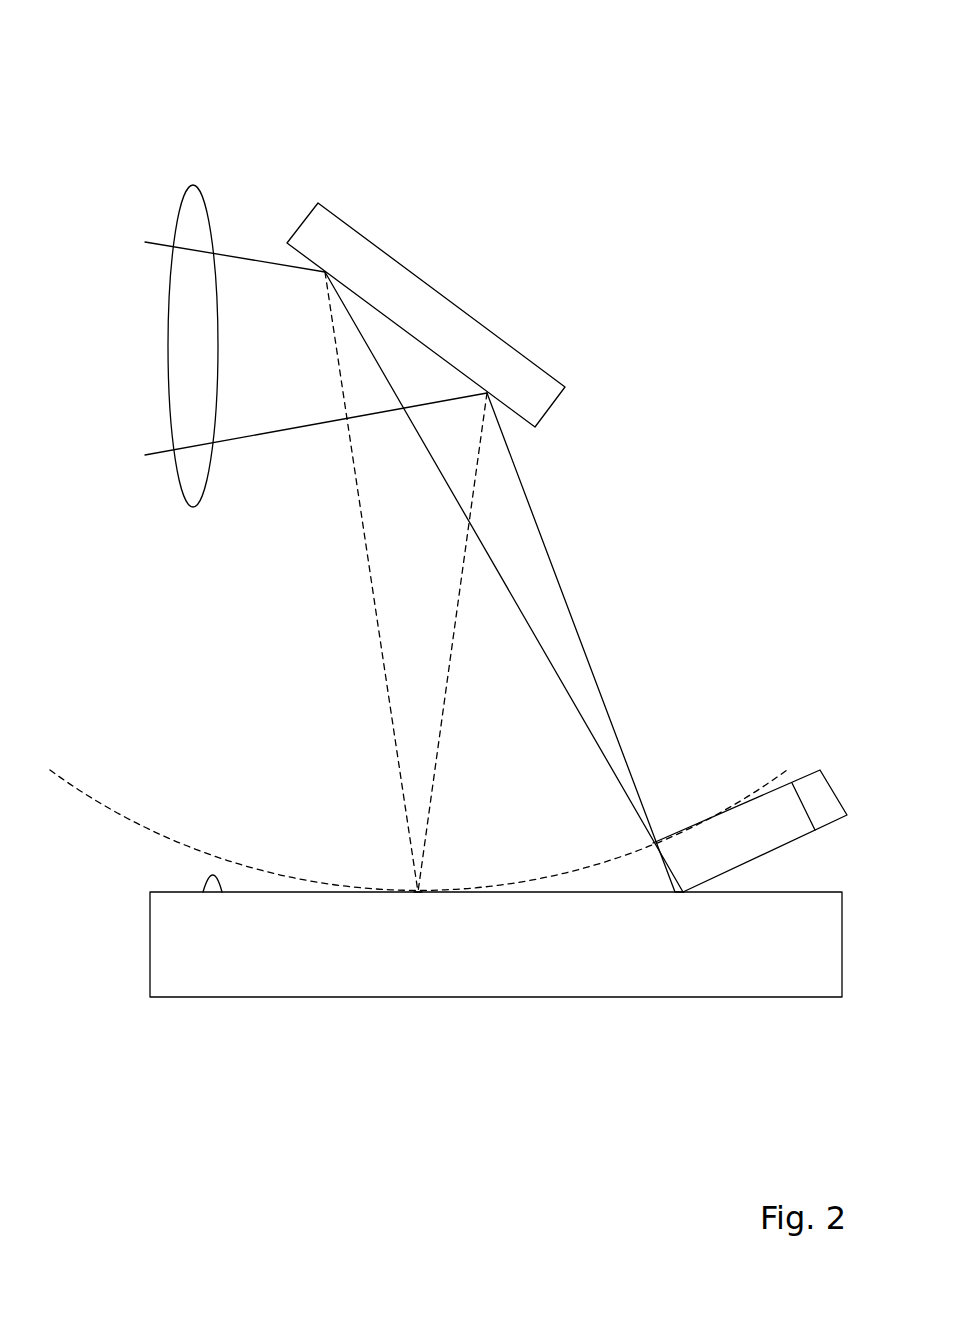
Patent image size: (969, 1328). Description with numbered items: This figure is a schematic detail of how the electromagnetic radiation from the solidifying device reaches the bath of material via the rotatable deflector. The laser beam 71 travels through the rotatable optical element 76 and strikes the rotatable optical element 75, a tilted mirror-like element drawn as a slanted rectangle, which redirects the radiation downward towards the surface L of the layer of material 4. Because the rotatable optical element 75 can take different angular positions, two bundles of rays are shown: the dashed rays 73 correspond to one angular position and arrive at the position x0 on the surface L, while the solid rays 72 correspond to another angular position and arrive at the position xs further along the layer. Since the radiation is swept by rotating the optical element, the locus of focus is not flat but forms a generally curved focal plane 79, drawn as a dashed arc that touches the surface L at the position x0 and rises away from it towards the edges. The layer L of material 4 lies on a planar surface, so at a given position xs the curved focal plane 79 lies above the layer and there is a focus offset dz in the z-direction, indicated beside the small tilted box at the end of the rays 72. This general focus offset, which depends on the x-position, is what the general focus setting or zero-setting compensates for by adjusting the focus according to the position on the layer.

The rotatable optical element 76 is at (213, 215).
The laser beam 71 is at (263, 332).
The rotatable optical element 75 is at (433, 313).
The ray 72 is at (518, 535).
The ray 73 is at (397, 600).
The curved focal plane 79 is at (110, 810).
The focus offset dz is at (805, 810).
The layer of material 4 is at (363, 945).
The surface of the layer of material L is at (203, 892).
The position x0 is at (418, 892).
The position xs is at (680, 892).